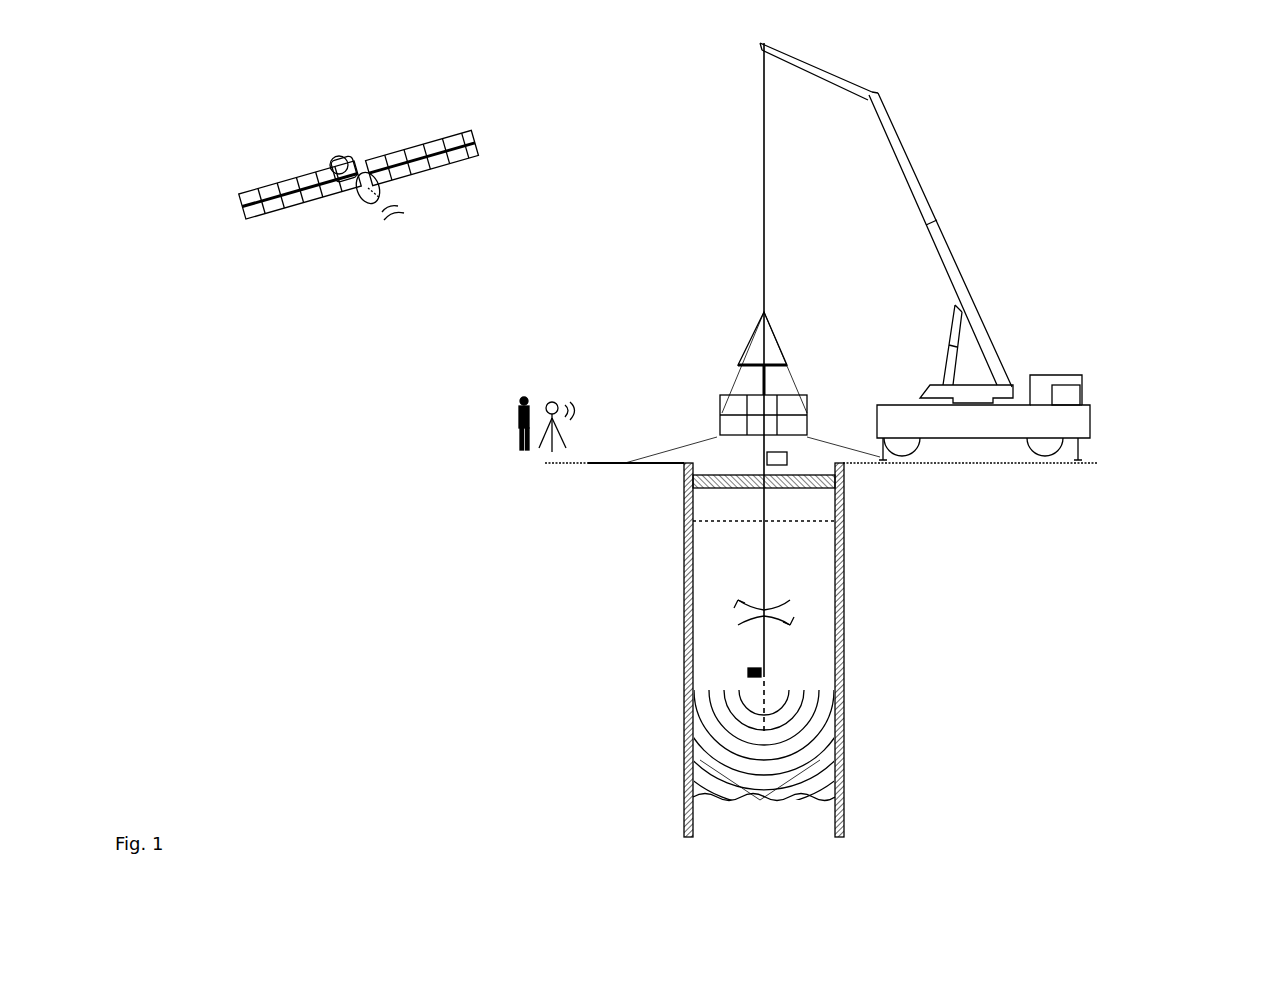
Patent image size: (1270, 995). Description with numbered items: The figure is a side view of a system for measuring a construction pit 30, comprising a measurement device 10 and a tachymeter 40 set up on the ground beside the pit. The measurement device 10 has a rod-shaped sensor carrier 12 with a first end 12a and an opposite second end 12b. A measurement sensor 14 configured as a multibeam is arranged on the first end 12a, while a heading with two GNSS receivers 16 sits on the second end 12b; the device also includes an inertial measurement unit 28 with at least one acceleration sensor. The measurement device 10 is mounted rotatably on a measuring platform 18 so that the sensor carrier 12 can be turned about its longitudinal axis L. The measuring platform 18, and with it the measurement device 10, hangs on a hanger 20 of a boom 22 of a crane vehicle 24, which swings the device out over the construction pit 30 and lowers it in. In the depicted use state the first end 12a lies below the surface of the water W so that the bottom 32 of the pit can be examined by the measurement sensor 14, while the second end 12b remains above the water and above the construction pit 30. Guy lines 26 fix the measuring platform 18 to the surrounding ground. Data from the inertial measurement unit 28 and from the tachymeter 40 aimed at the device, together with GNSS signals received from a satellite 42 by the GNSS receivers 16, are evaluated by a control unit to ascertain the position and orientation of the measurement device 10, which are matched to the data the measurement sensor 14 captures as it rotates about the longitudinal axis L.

The measurement device 10 is at (780, 557).
The sensor carrier 12 is at (764, 558).
The first end 12a is at (765, 671).
The second end 12b is at (762, 380).
The measurement sensor 14 is at (750, 672).
The GNSS receivers 16 is at (785, 360).
The measuring platform 18 is at (735, 430).
The hanger 20 is at (762, 305).
The boom 22 is at (975, 312).
The crane vehicle 24 is at (1070, 423).
The guy lines 26 is at (663, 453).
The inertial measurement unit 28 is at (787, 458).
The construction pit 30 is at (842, 595).
The bottom 32 is at (825, 770).
The tachymeter 40 is at (550, 400).
The satellite 42 is at (258, 195).
The surface of the water W is at (708, 522).
The longitudinal axis L is at (765, 692).